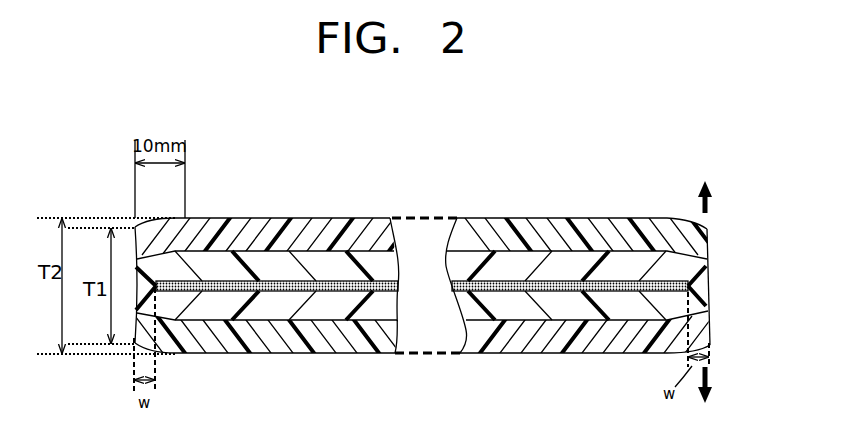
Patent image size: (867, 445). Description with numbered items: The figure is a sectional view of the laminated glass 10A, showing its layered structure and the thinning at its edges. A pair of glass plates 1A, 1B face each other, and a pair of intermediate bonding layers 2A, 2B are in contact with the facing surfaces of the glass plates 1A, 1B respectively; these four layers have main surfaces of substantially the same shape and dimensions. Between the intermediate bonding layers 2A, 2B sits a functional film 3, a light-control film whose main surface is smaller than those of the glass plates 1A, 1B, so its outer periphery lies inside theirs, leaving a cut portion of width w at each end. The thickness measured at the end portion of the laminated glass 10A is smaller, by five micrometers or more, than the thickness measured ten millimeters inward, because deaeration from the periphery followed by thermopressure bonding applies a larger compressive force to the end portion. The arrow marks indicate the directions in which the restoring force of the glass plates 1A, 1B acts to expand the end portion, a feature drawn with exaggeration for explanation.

The glass plate 1A is at (700, 335).
The glass plate 1B is at (706, 232).
The intermediate bonding layer 2A is at (703, 305).
The intermediate bonding layer 2B is at (703, 268).
The functional film 3 is at (702, 285).
The laminated glass 10A is at (491, 206).